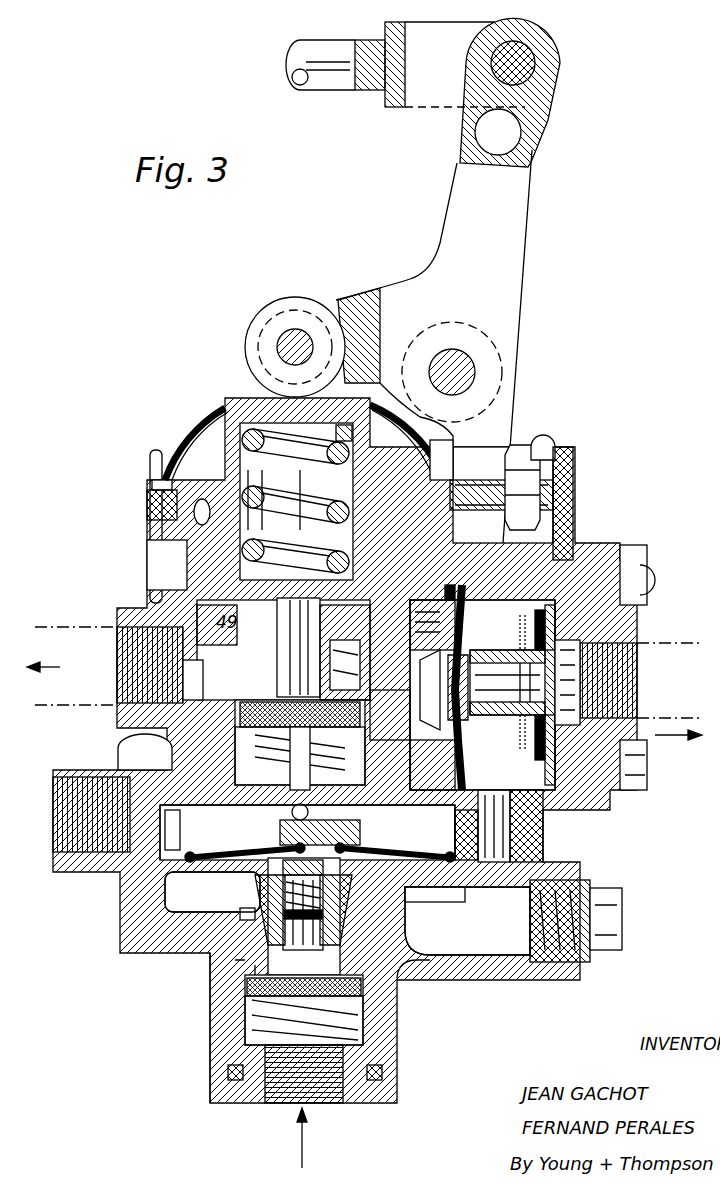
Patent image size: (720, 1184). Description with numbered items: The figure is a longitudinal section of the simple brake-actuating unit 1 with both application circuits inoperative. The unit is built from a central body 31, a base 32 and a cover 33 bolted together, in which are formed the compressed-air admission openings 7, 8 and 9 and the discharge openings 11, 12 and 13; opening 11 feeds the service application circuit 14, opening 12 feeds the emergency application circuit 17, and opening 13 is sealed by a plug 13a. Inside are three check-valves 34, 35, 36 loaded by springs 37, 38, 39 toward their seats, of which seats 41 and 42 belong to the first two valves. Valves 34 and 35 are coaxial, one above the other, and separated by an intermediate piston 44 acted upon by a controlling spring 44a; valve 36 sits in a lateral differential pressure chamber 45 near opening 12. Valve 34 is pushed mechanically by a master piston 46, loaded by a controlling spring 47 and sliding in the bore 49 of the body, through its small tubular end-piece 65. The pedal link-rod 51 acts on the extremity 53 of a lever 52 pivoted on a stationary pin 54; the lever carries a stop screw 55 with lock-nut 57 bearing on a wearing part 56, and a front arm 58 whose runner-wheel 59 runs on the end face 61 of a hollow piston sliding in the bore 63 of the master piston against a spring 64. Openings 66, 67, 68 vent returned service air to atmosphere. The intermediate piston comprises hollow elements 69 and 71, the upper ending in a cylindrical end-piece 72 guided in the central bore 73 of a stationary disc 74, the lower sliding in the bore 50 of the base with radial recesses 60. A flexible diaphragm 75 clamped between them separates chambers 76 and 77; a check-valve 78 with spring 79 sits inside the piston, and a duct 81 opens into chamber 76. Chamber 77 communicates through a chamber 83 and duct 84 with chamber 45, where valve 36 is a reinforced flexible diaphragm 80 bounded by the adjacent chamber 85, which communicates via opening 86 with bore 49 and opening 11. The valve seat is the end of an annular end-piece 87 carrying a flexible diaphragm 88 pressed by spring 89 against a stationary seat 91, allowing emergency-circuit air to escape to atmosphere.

The actuating unit 1 is at (640, 622).
The compressed-air admission opening 7 is at (306, 751).
The compressed-air admission opening 8 is at (322, 1085).
The compressed-air admission opening 9 is at (72, 832).
The discharge opening 11 is at (130, 658).
The discharge opening 12 is at (618, 700).
The discharge opening 13 is at (565, 887).
The plug 13a is at (597, 940).
The service application circuit 14 is at (62, 628).
The emergency application circuit 17 is at (663, 722).
The central body 31 is at (160, 717).
The base 32 is at (216, 981).
The cover 33 is at (152, 504).
The check-valve 34 is at (445, 722).
The check-valve 35 is at (362, 990).
The check-valve 36 is at (470, 700).
The spring 37 is at (262, 743).
The spring 38 is at (352, 1020).
The spring 39 is at (455, 735).
The seat 41 is at (255, 697).
The seat 42 is at (256, 965).
The intermediate piston 44 is at (250, 905).
The controlling spring 44a is at (212, 892).
The differential pressure chamber 45 is at (470, 588).
The master piston 46 is at (232, 625).
The controlling spring 47 is at (353, 648).
The bore 49 is at (190, 594).
The bore 50 is at (383, 937).
The link-rod 51 is at (342, 50).
The lever 52 is at (516, 271).
The extremity 53 is at (540, 48).
The stationary pin 54 is at (476, 373).
The screw 55 is at (552, 487).
The wearing part 56 is at (440, 478).
The lock-nut 57 is at (520, 524).
The front arm 58 is at (408, 296).
The runner-wheel 59 is at (254, 332).
The radial recesses 60 is at (366, 895).
The end face 61 is at (238, 392).
The bore 63 is at (215, 557).
The controlling spring 64 is at (297, 474).
The tubular end-piece 65 is at (290, 614).
The opening 66 is at (295, 521).
The opening 67 is at (158, 484).
The opening 68 is at (190, 513).
The hollow element 69 is at (248, 842).
The hollow element 71 is at (372, 880).
The cylindrical end-piece 72 is at (360, 800).
The central bore 73 is at (282, 800).
The disc 74 is at (450, 838).
The flexible diaphragm 75 is at (178, 830).
The chamber 76 is at (478, 838).
The chamber 77 is at (416, 892).
The check-valve 78 is at (303, 914).
The controlling spring 79 is at (237, 884).
The flexible diaphragm 80 is at (462, 635).
The duct 81 is at (372, 848).
The chamber 83 is at (446, 947).
The duct 84 is at (512, 850).
The chamber 85 is at (410, 632).
The opening 86 is at (412, 705).
The annular end-piece 87 is at (560, 657).
The flexible diaphragm 88 is at (530, 618).
The controlling spring 89 is at (528, 748).
The stationary seat 91 is at (550, 612).